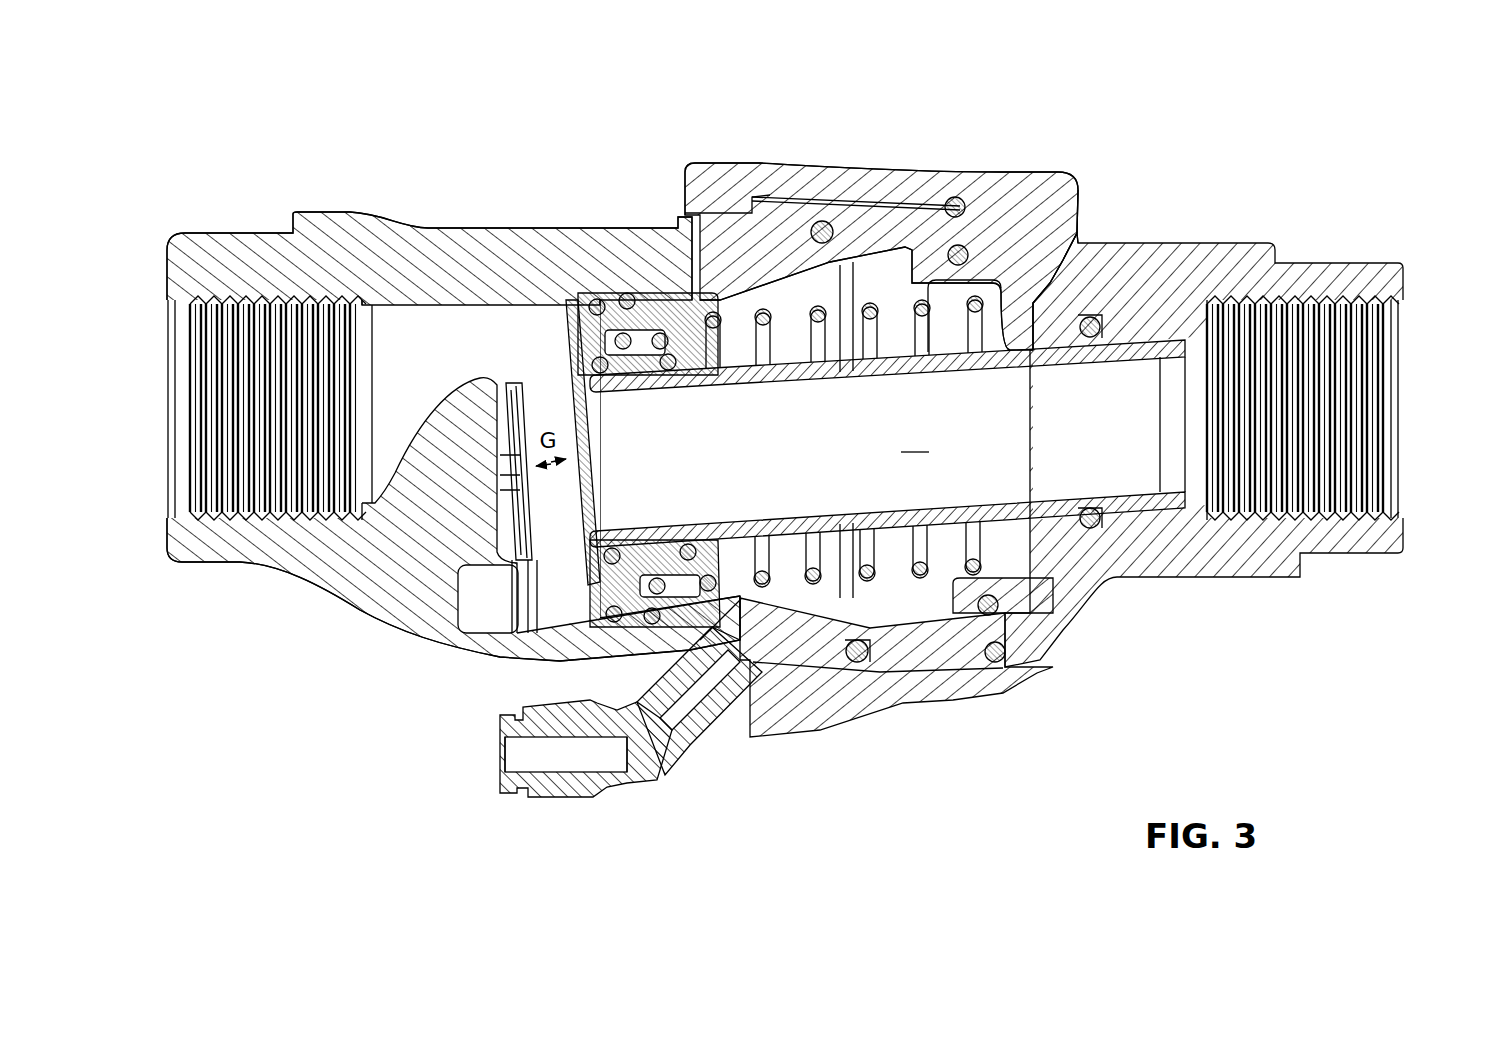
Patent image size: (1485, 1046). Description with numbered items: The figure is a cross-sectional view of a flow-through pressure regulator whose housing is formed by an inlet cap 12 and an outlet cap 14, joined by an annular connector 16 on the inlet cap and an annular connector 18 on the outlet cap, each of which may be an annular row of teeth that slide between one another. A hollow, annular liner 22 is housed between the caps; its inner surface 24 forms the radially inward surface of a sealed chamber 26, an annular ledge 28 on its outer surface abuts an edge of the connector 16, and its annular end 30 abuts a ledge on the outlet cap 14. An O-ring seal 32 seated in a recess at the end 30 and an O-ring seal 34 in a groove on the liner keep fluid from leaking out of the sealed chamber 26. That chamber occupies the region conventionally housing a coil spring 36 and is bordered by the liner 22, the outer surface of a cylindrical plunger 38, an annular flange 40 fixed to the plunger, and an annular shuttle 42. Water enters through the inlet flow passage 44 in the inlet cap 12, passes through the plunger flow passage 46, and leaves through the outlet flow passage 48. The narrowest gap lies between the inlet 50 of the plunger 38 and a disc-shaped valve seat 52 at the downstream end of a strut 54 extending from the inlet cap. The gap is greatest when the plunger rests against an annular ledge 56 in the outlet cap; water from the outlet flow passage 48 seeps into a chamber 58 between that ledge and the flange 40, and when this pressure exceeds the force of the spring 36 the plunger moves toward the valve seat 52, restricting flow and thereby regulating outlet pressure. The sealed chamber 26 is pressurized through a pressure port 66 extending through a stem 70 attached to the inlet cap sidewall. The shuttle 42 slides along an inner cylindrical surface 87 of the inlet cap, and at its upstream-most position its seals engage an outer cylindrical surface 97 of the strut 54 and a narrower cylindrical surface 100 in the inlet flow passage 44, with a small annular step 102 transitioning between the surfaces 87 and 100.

The inlet cap 12 is at (418, 140).
The outlet cap 14 is at (1130, 207).
The annular connector 16 is at (770, 205).
The annular connector 18 is at (770, 160).
The liner 22 is at (900, 218).
The inner surface of the liner 24 is at (875, 262).
The sealed chamber 26 is at (935, 660).
The annular ledge 28 is at (928, 596).
The annular end of the liner 30 is at (1007, 617).
The O-ring seal 32 is at (993, 664).
The O-ring seal 34 is at (856, 662).
The coil spring 36 is at (905, 250).
The cylindrical plunger 38 is at (1153, 500).
The annular flange 40 is at (649, 460).
The annular shuttle 42 is at (570, 300).
The inlet flow passage 44 is at (182, 401).
The plunger flow passage 46 is at (887, 443).
The outlet flow passage 48 is at (1410, 474).
The inlet of the plunger 50 is at (568, 529).
The valve seat 52 is at (536, 488).
The strut 54 is at (440, 512).
The annular ledge 56 is at (1085, 242).
The chamber 58 is at (1079, 180).
The pressure port 66 is at (497, 760).
The stem 70 is at (657, 780).
The inner cylindrical surface of the inlet cap 87 is at (520, 365).
The outer cylindrical surface of the strut 97 is at (497, 375).
The cylindrical surface 100 is at (500, 380).
The annular step 102 is at (503, 630).